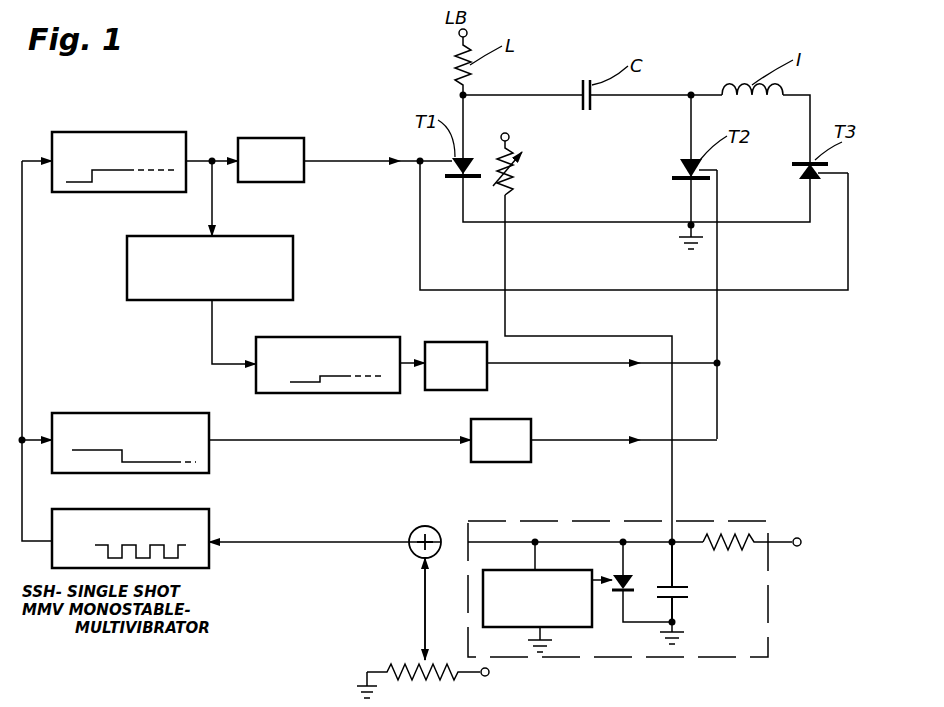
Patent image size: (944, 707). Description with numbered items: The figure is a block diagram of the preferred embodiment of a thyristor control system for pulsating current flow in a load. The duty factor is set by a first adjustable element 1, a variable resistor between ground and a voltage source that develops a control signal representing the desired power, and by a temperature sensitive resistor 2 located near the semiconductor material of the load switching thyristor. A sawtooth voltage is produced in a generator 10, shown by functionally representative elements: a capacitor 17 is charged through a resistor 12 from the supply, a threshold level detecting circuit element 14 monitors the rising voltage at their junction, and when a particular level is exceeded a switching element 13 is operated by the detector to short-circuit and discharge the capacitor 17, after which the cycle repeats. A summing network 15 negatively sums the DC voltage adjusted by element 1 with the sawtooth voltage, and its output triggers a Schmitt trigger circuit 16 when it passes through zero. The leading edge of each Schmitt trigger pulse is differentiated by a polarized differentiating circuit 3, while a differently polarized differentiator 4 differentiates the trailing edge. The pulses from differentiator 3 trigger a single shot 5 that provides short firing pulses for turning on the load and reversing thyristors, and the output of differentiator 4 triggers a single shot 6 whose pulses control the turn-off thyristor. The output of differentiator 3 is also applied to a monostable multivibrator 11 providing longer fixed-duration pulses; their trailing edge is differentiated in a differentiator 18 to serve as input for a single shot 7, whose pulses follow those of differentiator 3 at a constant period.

The adjustable element 1 is at (412, 652).
The temperature sensitive resistor 2 is at (515, 177).
The polarized differentiating circuit 3 is at (160, 132).
The differentiator 4 is at (170, 413).
The single shot 5 is at (272, 138).
The single shot 6 is at (522, 419).
The single shot 7 is at (452, 342).
The generator 10 is at (768, 620).
The monostable multivibrator 11 is at (258, 236).
The resistor 12 is at (722, 540).
The switching element 13 is at (650, 572).
The threshold level detecting circuit element 14 is at (580, 627).
The summing network 15 is at (414, 530).
The Schmitt trigger circuit 16 is at (198, 509).
The capacitor 17 is at (682, 598).
The differentiator 18 is at (338, 337).